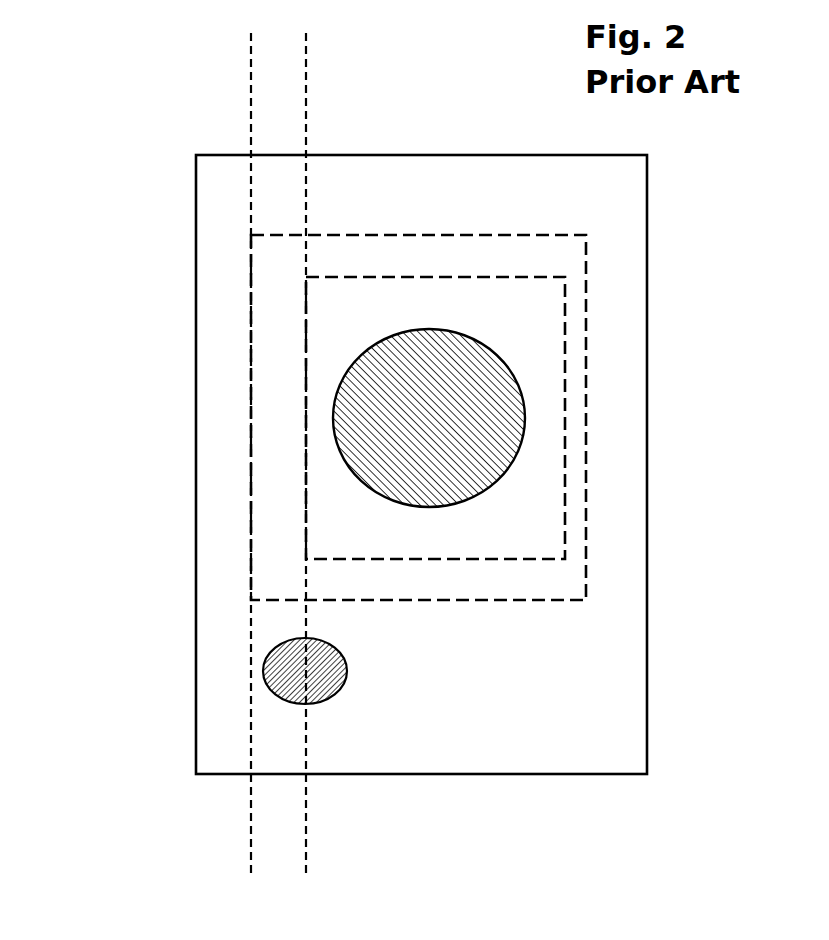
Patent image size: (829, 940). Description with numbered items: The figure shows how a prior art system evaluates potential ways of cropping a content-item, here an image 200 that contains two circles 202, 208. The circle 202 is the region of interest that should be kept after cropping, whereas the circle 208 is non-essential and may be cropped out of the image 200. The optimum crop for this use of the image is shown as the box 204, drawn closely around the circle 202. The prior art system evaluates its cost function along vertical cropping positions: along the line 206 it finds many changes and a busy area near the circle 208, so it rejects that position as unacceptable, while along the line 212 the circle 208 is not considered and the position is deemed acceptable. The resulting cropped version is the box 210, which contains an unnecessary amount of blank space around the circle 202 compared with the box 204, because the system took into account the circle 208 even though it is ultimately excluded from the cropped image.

The image 200 is at (196, 165).
The circle 202 is at (520, 370).
The box 204 is at (567, 440).
The line 206 is at (307, 815).
The circle 208 is at (263, 682).
The box 210 is at (585, 520).
The line 212 is at (248, 840).